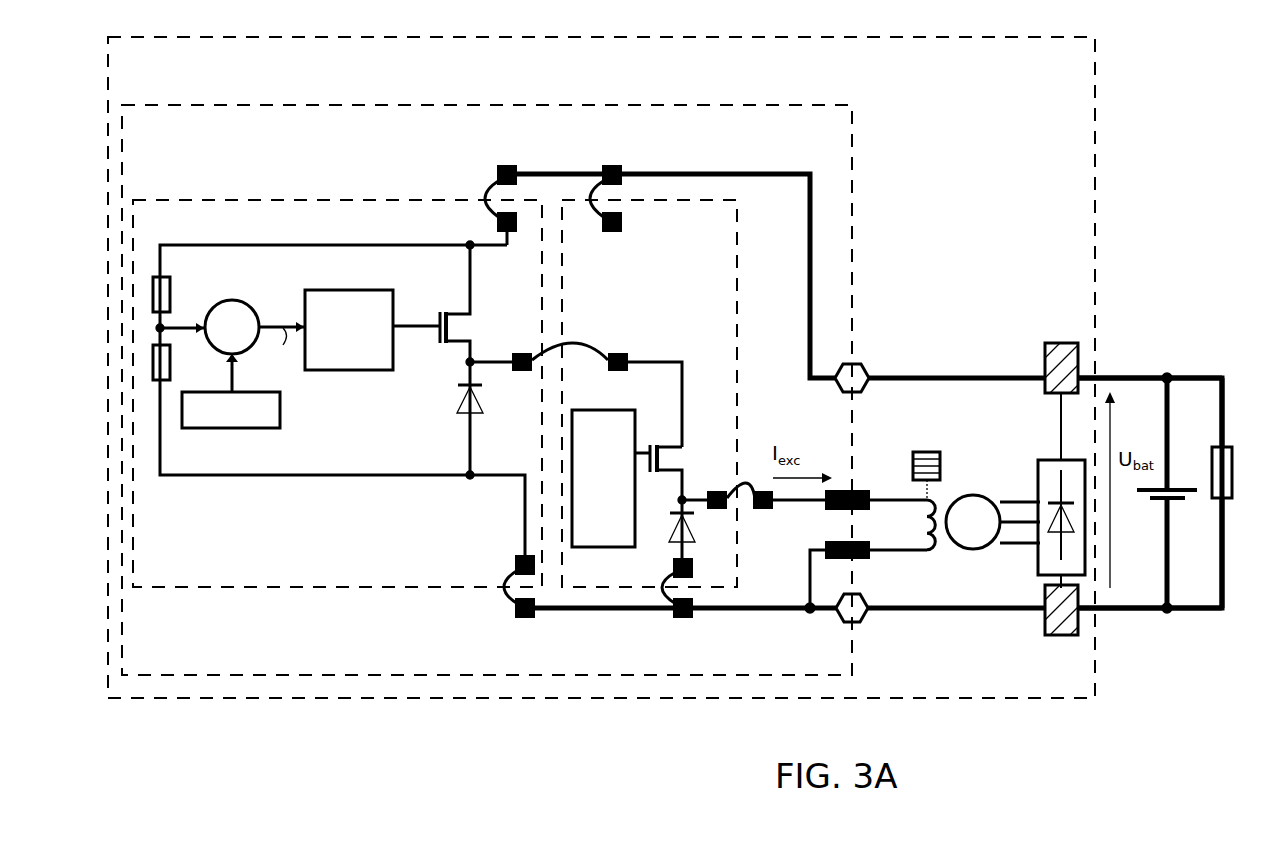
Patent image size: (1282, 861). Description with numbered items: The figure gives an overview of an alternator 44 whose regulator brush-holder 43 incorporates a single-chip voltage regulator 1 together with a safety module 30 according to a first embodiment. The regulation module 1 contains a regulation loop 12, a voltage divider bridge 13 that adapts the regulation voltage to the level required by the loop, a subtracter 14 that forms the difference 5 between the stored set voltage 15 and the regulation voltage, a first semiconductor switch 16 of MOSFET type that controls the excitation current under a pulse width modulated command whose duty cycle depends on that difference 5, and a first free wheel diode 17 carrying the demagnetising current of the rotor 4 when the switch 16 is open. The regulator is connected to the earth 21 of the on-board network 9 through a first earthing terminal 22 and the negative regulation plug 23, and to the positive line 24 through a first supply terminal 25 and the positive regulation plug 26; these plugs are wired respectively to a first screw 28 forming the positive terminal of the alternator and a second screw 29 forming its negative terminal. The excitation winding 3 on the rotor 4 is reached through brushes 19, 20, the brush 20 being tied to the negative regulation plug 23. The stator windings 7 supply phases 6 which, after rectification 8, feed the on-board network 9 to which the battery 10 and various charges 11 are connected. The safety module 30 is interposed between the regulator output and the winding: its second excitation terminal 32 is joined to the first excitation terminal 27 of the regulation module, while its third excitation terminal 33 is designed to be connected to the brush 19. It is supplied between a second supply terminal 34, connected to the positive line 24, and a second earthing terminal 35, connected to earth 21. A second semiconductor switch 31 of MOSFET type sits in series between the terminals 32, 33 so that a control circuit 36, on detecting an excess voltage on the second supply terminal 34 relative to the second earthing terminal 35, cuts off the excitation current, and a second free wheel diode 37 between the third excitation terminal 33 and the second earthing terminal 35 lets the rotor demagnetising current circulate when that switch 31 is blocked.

The voltage regulator 1 is at (320, 588).
The excitation winding 3 is at (927, 552).
The rotor 4 is at (922, 452).
The difference 5 is at (283, 345).
The phases 6 is at (1022, 524).
The stator windings 7 is at (968, 505).
The rectification 8 is at (1038, 475).
The on-board network 9 is at (1190, 377).
The battery 10 is at (1172, 500).
The charges 11 is at (1232, 472).
The regulation loop 12 is at (325, 370).
The voltage divider bridge 13 is at (172, 358).
The subtracter 14 is at (232, 312).
The stored set voltage 15 is at (232, 430).
The first semiconductor switch 16 is at (445, 312).
The first free wheel diode 17 is at (465, 428).
The brush 19 is at (855, 492).
The brush 20 is at (858, 560).
The earth 21 is at (1115, 610).
The first earthing terminal 22 is at (513, 568).
The negative regulation plug 23 is at (865, 620).
The positive line 24 is at (1122, 377).
The first supply terminal 25 is at (510, 233).
The positive regulation plug 26 is at (856, 372).
The first excitation terminal 27 is at (518, 355).
The first screw 28 is at (1045, 358).
The second screw 29 is at (1045, 620).
The safety module 30 is at (740, 368).
The second semiconductor switch 31 is at (648, 445).
The second excitation terminal 32 is at (610, 348).
The third excitation terminal 33 is at (708, 492).
The second supply terminal 34 is at (618, 232).
The second earthing terminal 35 is at (672, 566).
The control circuit 36 is at (613, 410).
The second free wheel diode 37 is at (694, 528).
The regulator brush-holder 43 is at (852, 148).
The alternator 44 is at (981, 30).